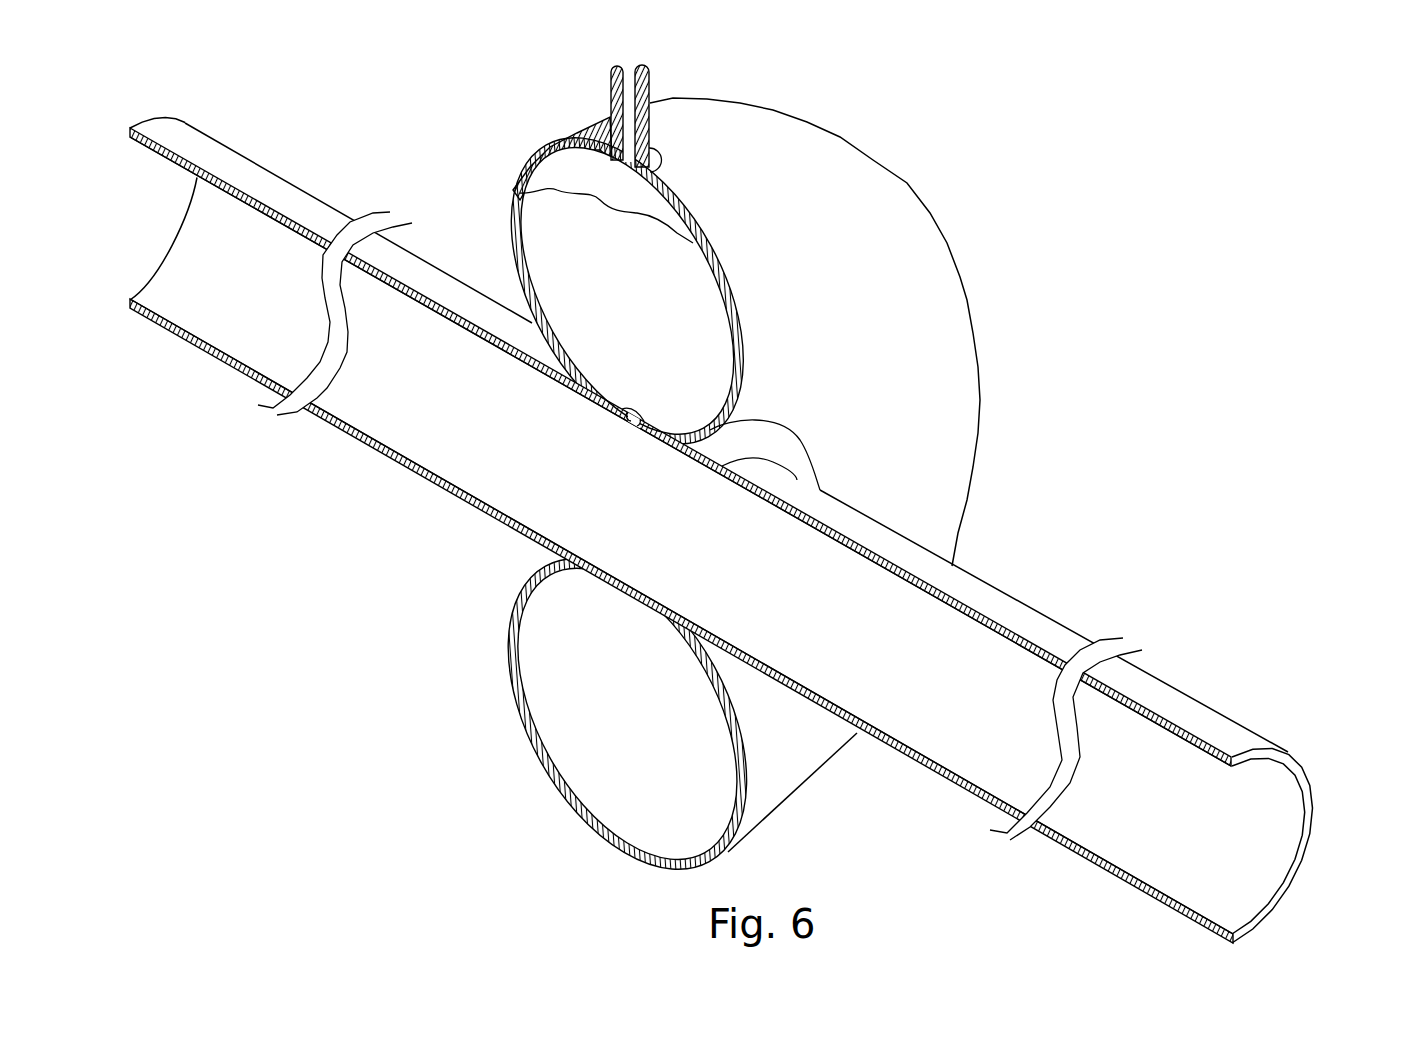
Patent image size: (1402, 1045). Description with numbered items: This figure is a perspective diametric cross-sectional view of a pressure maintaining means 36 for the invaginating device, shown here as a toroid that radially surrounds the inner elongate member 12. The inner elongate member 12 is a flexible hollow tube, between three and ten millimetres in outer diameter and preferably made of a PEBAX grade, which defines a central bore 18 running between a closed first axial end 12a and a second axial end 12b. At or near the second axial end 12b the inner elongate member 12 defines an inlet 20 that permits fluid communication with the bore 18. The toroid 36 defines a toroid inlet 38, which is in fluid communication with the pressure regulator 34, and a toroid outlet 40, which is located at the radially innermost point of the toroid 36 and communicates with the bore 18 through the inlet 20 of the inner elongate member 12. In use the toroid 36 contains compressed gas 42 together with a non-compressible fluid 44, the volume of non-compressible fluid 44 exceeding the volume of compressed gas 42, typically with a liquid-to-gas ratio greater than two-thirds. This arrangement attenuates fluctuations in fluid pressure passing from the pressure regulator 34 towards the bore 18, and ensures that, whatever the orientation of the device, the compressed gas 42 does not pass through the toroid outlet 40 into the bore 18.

The inner elongate member 12 is at (1022, 608).
The closed first axial end 12a is at (1318, 787).
The second axial end 12b is at (183, 226).
The central bore 18 is at (1158, 824).
The inlet 20 is at (630, 418).
The pressure regulator 34 is at (860, 180).
The pressure maintaining means 36 is at (804, 470).
The toroid inlet 38 is at (658, 75).
The toroid outlet 40 is at (600, 397).
The compressed gas 42 is at (622, 290).
The non-compressible fluid 44 is at (583, 163).